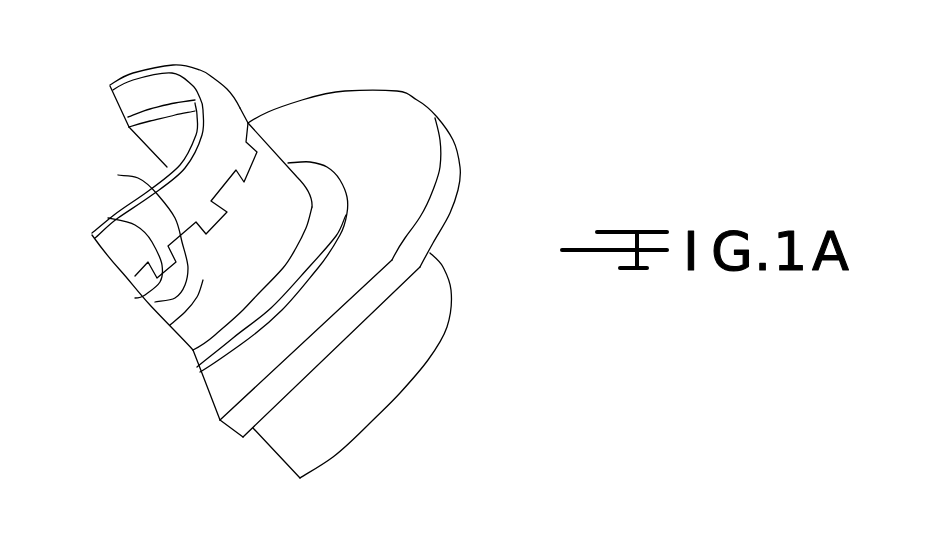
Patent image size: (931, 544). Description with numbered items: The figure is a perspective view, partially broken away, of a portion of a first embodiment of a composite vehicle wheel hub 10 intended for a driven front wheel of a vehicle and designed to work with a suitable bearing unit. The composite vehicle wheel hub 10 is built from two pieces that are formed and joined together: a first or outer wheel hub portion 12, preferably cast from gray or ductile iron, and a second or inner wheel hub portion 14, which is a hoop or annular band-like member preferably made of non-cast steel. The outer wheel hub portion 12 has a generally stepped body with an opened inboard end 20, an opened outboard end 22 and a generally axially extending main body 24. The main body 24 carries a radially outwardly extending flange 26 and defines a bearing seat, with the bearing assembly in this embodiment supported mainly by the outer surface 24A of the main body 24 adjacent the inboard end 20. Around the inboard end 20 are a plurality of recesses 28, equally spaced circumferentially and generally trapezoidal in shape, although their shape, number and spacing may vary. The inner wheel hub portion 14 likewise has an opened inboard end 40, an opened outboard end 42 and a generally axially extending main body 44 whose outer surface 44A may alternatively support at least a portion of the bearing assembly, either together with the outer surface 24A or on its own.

The composite vehicle wheel hub 10 is at (476, 100).
The outer wheel hub portion 12 is at (398, 85).
The inner wheel hub portion 14 is at (114, 80).
The inboard end 20 is at (118, 175).
The outboard end 22 is at (390, 403).
The main body 24 is at (180, 350).
The outer surface 24A is at (177, 323).
The flange 26 is at (237, 410).
The recesses 28 is at (108, 218).
The inboard end 40 is at (145, 68).
The outboard end 42 is at (138, 298).
The main body 44 is at (236, 108).
The outer surface 44A is at (238, 113).